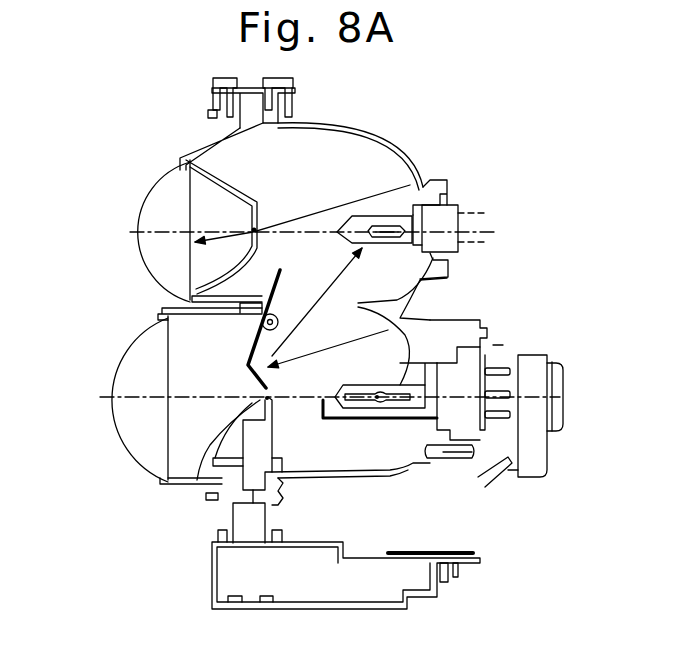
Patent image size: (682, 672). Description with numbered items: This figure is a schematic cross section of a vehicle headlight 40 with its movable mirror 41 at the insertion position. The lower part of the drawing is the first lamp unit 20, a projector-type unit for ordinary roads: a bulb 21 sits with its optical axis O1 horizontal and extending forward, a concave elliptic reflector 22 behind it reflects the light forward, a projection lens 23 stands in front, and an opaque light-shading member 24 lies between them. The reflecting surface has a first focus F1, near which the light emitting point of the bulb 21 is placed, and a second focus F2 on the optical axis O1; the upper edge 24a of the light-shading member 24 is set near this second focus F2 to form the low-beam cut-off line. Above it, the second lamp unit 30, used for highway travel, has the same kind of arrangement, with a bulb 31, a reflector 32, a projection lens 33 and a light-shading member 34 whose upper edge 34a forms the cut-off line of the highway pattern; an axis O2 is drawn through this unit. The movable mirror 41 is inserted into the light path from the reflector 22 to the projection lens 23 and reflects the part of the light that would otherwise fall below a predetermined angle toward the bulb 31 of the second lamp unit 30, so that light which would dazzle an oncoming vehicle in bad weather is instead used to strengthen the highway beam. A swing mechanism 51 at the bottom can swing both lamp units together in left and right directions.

The first lamp unit 20 is at (428, 472).
The bulb 21 is at (427, 318).
The reflector 22 is at (402, 478).
The projection lens 23 is at (128, 447).
The light-shading member 24 is at (262, 405).
The upper edge 24a is at (212, 491).
The second lamp unit 30 is at (440, 150).
The bulb 31 is at (397, 208).
The reflector 32 is at (378, 131).
The projection lens 33 is at (157, 190).
The light-shading member 34 is at (193, 255).
The upper edge 34a is at (247, 228).
The vehicle headlight 40 is at (585, 185).
The movable mirror 41 is at (245, 345).
The swing mechanism 51 is at (352, 592).
The first focus F1 is at (377, 405).
The second focus F2 is at (266, 399).
The optical axis O1 is at (113, 398).
The optical axis O2 is at (140, 233).